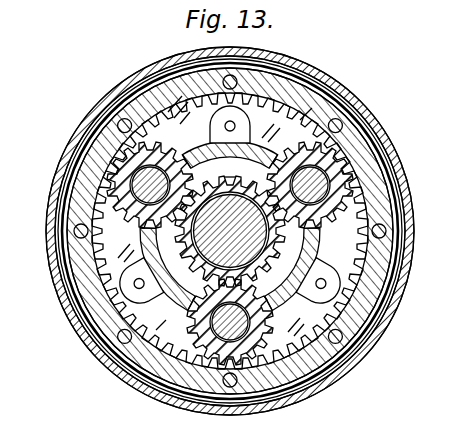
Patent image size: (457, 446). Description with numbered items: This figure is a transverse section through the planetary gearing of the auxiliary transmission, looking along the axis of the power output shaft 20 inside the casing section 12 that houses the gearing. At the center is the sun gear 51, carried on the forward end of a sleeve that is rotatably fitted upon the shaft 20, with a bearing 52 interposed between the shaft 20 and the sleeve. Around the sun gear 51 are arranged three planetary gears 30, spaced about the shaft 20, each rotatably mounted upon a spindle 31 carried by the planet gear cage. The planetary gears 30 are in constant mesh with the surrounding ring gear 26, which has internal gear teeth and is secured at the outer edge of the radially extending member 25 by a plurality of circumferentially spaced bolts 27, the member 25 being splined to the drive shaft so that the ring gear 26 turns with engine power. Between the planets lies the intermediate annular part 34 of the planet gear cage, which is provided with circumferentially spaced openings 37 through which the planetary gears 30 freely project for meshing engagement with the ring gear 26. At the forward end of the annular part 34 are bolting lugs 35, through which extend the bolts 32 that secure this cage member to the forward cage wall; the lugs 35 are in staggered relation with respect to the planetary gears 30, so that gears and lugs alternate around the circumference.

The casing section 12 is at (333, 82).
The power output shaft 20 is at (200, 262).
The radially extending member 25 is at (282, 72).
The ring gear 26 is at (389, 130).
The bolts 27 is at (342, 121).
The planetary gears 30 is at (103, 133).
The spindle 31 is at (140, 182).
The bolts 32 is at (228, 121).
The intermediate annular part 34 is at (210, 128).
The bolting lugs 35 is at (249, 124).
The openings 37 is at (274, 172).
The sun gear 51 is at (280, 252).
The bearing 52 is at (225, 177).